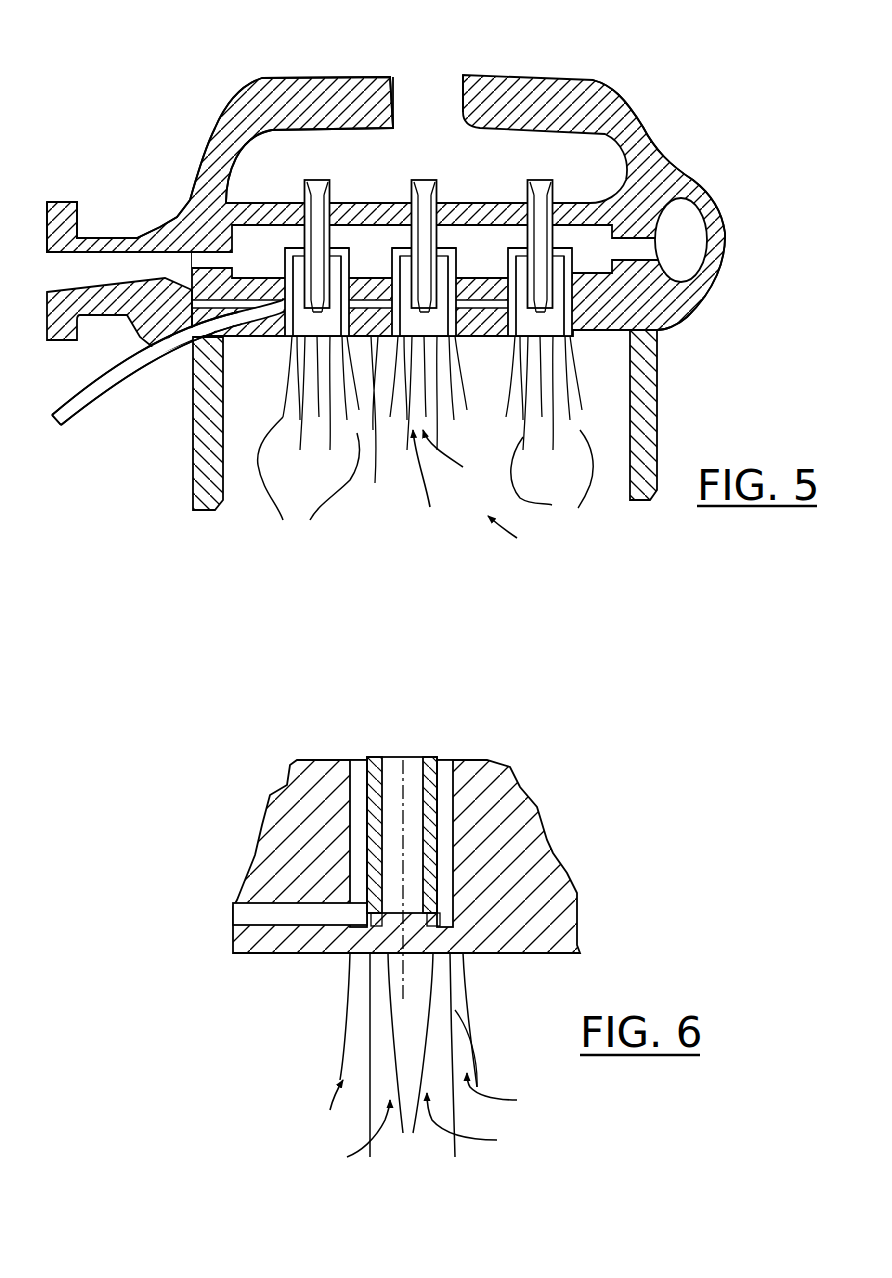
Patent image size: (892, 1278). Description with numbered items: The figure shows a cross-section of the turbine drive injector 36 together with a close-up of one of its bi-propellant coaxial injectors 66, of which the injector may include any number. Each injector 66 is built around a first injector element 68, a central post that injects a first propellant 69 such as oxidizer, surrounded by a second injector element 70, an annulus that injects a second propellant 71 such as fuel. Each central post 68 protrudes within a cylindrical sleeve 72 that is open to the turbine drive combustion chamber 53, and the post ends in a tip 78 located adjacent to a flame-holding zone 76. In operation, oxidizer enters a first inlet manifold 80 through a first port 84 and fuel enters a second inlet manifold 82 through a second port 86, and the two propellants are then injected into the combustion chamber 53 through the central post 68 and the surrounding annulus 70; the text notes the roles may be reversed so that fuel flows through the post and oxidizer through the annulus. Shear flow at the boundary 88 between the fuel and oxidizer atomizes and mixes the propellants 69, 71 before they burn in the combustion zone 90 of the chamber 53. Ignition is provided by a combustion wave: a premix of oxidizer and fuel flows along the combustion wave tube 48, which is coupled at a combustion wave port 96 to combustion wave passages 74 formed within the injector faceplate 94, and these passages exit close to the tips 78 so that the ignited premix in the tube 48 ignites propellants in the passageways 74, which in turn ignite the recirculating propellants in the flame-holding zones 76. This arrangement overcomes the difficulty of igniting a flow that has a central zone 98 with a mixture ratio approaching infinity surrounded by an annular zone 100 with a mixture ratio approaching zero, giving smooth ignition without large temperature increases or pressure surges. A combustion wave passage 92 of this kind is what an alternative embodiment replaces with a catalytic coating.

In FIG. 5, the turbine drive injector 36 is at (563, 78).
In FIG. 5, the combustion wave tube 48 is at (72, 412).
In FIG. 5, the turbine drive combustion chamber 53 is at (210, 462).
In FIG. 5, the bi-propellant coaxial injector 66 is at (335, 185).
In FIG. 5, the first injector element 68 is at (406, 232).
In FIG. 6, the first injector element 68 is at (442, 760).
In FIG. 5, the first propellant 69 is at (431, 418).
In FIG. 6, the first propellant 69 is at (393, 1020).
In FIG. 5, the second injector element 70 is at (285, 250).
In FIG. 6, the second injector element 70 is at (465, 795).
In FIG. 5, the second propellant 71 is at (275, 378).
In FIG. 6, the second propellant 71 is at (460, 1032).
In FIG. 5, the cylindrical sleeve 72 is at (290, 256).
In FIG. 5, the combustion wave passage 74 is at (370, 278).
In FIG. 6, the combustion wave passage 74 is at (262, 917).
In FIG. 5, the flame-holding zone 76 is at (285, 445).
In FIG. 6, the flame-holding zone 76 is at (367, 927).
In FIG. 5, the tip 78 is at (562, 280).
In FIG. 6, the tip 78 is at (448, 957).
In FIG. 5, the first inlet manifold 80 is at (615, 112).
In FIG. 5, the second inlet manifold 82 is at (203, 174).
In FIG. 5, the first port 84 is at (462, 74).
In FIG. 5, the second port 86 is at (48, 302).
In FIG. 5, the boundary 88 is at (572, 511).
In FIG. 6, the boundary 88 is at (455, 1010).
In FIG. 5, the combustion zone 90 is at (521, 535).
In FIG. 5, the combustion wave passage 92 is at (466, 334).
In FIG. 5, the injector faceplate 94 is at (660, 312).
In FIG. 5, the combustion wave port 96 is at (150, 350).
In FIG. 5, the central zone 98 is at (447, 468).
In FIG. 6, the central zone 98 is at (423, 1134).
In FIG. 5, the annular zone 100 is at (435, 484).
In FIG. 6, the annular zone 100 is at (425, 1104).